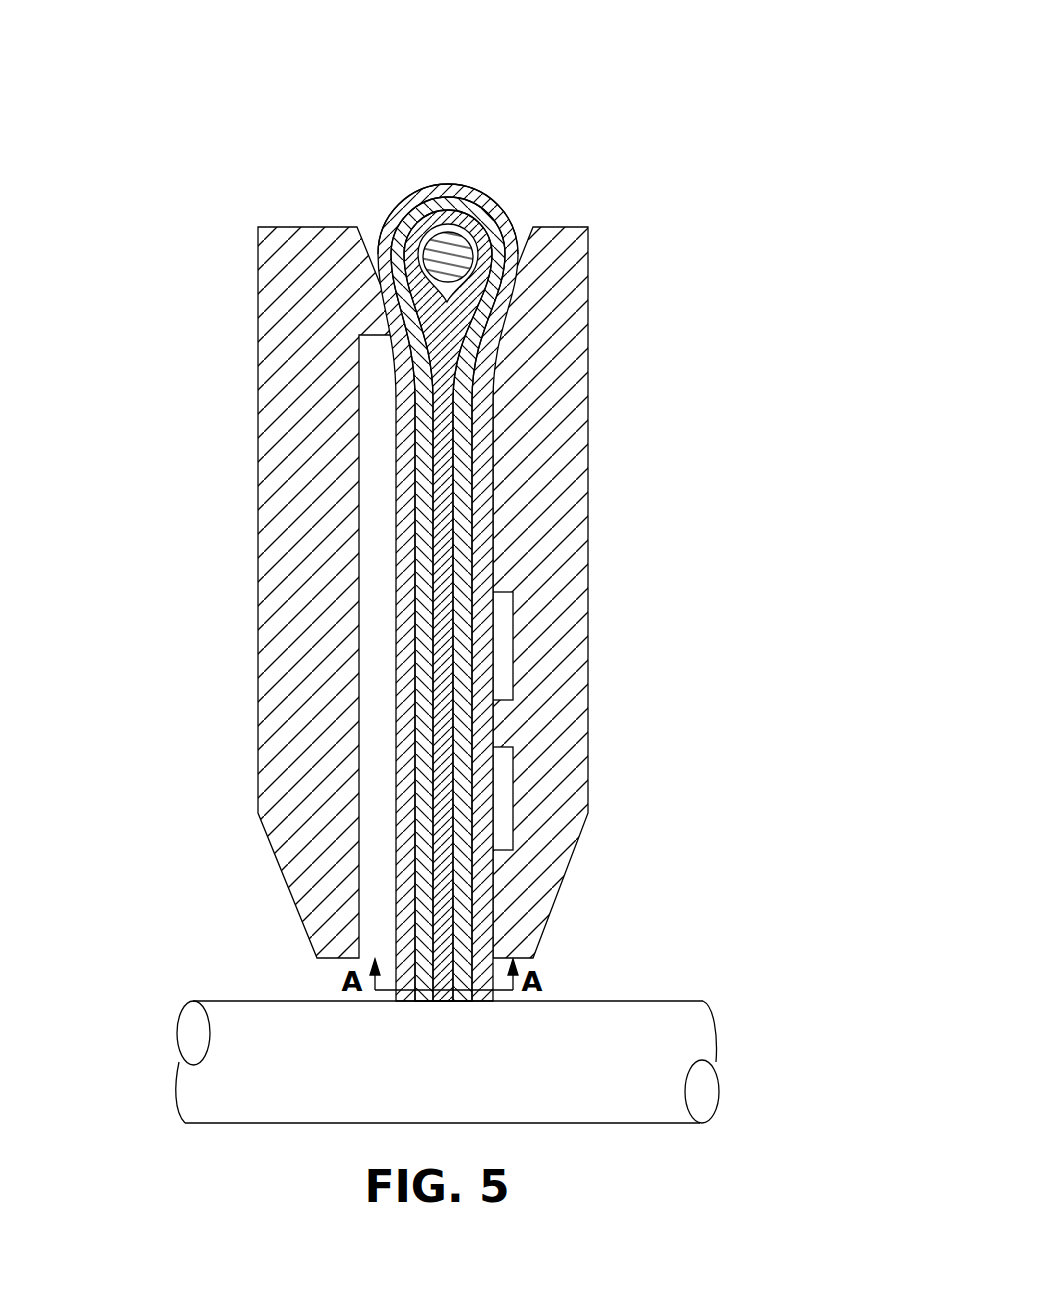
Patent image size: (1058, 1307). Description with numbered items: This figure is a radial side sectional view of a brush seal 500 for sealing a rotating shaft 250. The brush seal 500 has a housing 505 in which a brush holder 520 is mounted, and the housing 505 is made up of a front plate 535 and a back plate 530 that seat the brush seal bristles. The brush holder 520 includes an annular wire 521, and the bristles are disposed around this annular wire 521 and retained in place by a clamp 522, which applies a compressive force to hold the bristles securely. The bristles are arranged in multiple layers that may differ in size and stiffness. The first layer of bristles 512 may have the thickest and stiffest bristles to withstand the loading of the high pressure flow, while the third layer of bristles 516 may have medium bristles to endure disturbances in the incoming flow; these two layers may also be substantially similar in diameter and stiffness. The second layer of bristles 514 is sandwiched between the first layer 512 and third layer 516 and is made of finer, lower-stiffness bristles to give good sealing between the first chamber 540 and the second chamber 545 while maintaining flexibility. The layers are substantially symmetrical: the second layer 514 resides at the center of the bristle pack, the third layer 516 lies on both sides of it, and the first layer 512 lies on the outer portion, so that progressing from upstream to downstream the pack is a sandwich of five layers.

The brush seal 500 is at (441, 564).
The housing 505 is at (441, 592).
The brush holder 520 is at (426, 548).
The annular wire 521 is at (437, 250).
The clamp 522 is at (507, 212).
The first layer of bristles 512 is at (407, 593).
The third layer of bristles 516 is at (423, 522).
The second layer of bristles 514 is at (447, 430).
The front plate 535 is at (268, 403).
The back plate 530 is at (588, 787).
The first chamber 540 is at (123, 673).
The second chamber 545 is at (805, 673).
The rotating shaft 250 is at (467, 1081).